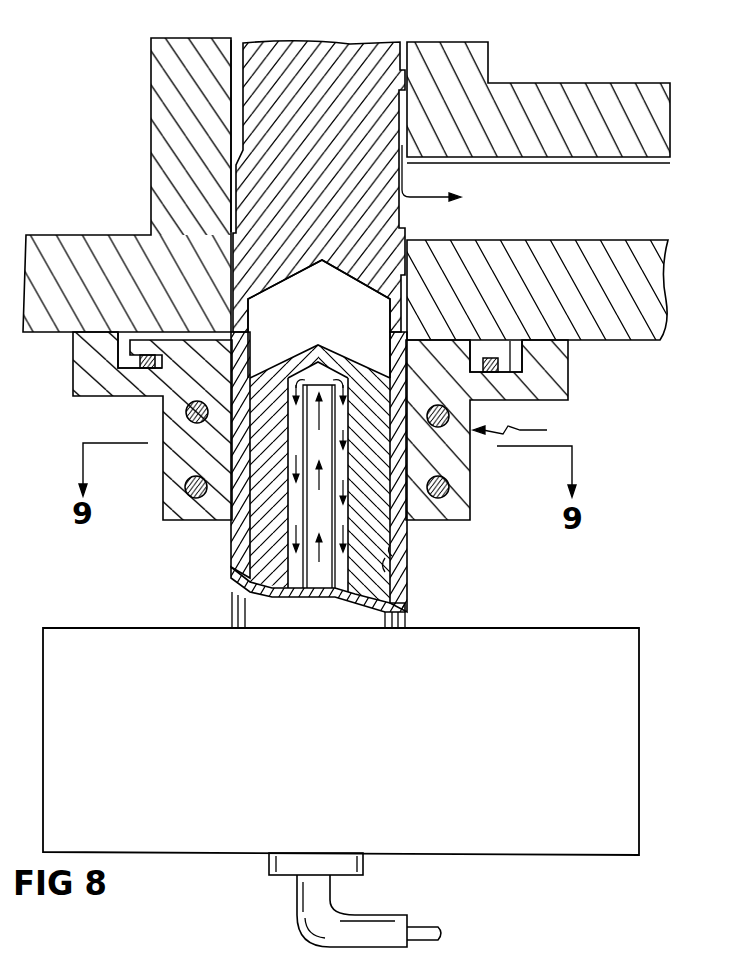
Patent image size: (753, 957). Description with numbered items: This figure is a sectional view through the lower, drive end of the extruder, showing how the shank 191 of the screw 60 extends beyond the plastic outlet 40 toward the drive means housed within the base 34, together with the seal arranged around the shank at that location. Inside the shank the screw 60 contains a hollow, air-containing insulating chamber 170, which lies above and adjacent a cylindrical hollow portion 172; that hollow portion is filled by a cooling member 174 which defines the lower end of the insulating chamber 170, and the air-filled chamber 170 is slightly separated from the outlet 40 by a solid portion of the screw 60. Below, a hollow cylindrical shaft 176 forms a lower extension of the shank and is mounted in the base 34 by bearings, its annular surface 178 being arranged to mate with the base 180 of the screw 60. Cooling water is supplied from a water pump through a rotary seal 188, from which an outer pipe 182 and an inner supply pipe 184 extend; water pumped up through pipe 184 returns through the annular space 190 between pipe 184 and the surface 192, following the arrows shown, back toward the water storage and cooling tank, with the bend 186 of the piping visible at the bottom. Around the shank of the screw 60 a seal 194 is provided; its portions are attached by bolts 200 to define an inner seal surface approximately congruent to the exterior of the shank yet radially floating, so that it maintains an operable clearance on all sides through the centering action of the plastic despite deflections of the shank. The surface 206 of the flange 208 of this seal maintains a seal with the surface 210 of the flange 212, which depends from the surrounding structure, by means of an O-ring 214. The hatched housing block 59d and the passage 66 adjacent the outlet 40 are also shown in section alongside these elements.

The housing block 59d is at (160, 80).
The screw 60 is at (340, 106).
The shank 191 is at (248, 268).
The plastic outlet 40 is at (527, 182).
The flow passage 66 is at (406, 62).
The insulating chamber 170 is at (340, 325).
The cooling member 174 is at (277, 373).
The hollow cylindrical shaft 176 is at (397, 578).
The cylindrical hollow portion 172 is at (379, 381).
The flange 212 is at (128, 390).
The surface 210 is at (122, 352).
The O-ring 214 is at (148, 369).
The surface 206 is at (522, 372).
The flange 208 is at (500, 353).
The bolts 200 is at (205, 399).
The seal 194 is at (526, 430).
The annular space 190 is at (295, 553).
The base 180 is at (393, 548).
The annular surface 178 is at (386, 565).
The surface 192 is at (406, 607).
The base 34 is at (510, 627).
The rotary seal 188 is at (268, 863).
The outer pipe 182 is at (377, 912).
The inner supply pipe 184 is at (421, 927).
The bend 186 is at (302, 941).